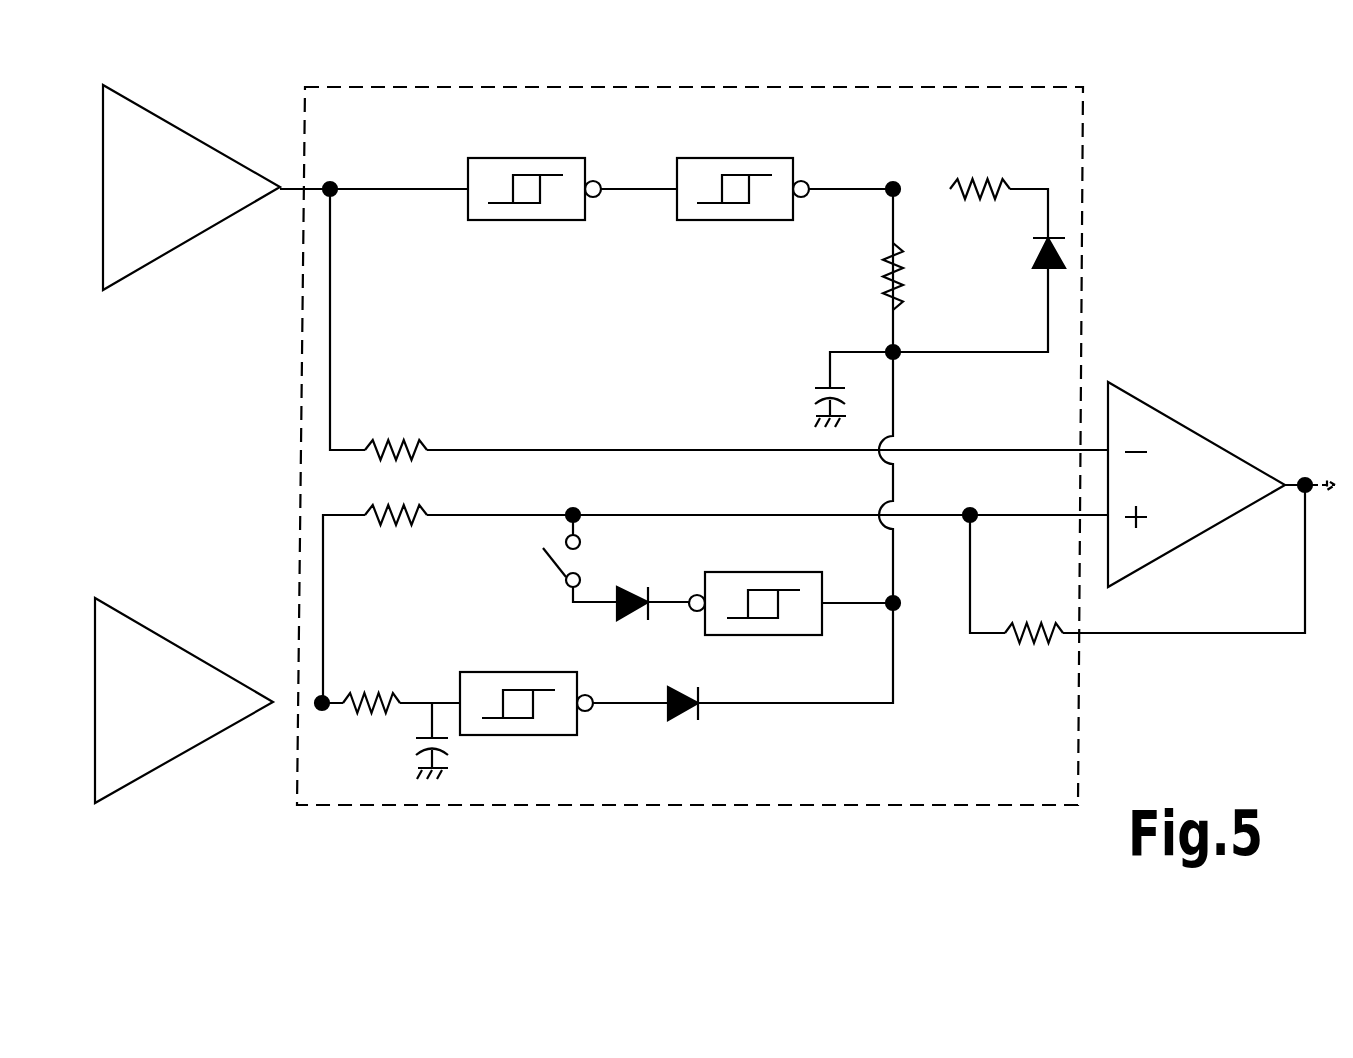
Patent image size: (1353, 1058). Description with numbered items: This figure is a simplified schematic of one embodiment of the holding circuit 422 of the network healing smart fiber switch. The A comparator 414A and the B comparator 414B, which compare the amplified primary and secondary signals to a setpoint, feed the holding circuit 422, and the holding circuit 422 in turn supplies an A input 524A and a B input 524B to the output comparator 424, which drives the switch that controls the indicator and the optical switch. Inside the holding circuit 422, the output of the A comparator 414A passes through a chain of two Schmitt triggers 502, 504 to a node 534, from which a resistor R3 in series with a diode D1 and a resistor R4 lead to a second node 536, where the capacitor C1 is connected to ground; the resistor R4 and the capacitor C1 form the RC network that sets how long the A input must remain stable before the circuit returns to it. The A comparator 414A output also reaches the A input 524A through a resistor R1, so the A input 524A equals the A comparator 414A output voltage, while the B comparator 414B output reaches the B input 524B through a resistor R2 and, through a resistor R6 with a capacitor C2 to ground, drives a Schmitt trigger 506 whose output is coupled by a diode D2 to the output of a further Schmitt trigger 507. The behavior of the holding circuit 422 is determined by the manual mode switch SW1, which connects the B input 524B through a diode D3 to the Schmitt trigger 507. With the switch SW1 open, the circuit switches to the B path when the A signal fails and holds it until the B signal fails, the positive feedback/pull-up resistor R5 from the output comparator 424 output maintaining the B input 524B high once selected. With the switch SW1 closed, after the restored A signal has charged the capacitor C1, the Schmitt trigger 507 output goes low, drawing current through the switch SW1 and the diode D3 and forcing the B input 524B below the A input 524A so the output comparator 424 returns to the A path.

The A comparator 414A is at (200, 130).
The B comparator 414B is at (198, 662).
The holding circuit 422 is at (1083, 175).
The output comparator 424 is at (1205, 430).
The Schmitt trigger 502 is at (518, 158).
The Schmitt trigger 504 is at (737, 158).
The Schmitt trigger 506 is at (512, 672).
The Schmitt trigger 507 is at (805, 572).
The node 534 is at (845, 189).
The node 536 is at (855, 350).
The A input 524A is at (930, 450).
The B input 524B is at (930, 515).
The resistor R1 is at (388, 440).
The resistor R2 is at (405, 530).
The resistor R3 is at (985, 170).
The resistor R4 is at (877, 268).
The positive feedback/pull-up resistor R5 is at (1030, 650).
The resistor R6 is at (374, 690).
The capacitor C1 is at (818, 388).
The capacitor C2 is at (412, 740).
The diode D1 is at (1038, 272).
The diode D2 is at (697, 715).
The diode D3 is at (620, 598).
The manual mode switch SW1 is at (558, 585).